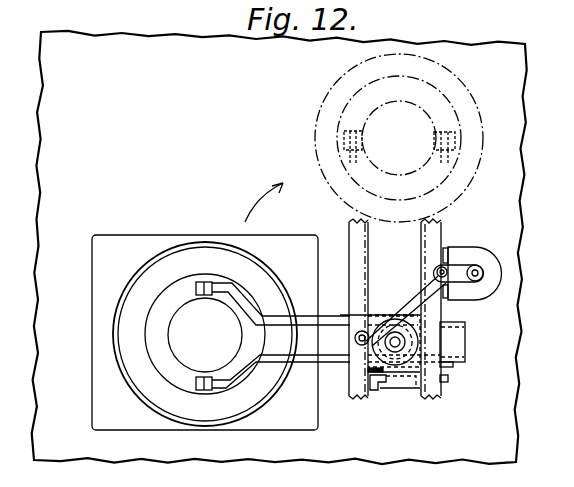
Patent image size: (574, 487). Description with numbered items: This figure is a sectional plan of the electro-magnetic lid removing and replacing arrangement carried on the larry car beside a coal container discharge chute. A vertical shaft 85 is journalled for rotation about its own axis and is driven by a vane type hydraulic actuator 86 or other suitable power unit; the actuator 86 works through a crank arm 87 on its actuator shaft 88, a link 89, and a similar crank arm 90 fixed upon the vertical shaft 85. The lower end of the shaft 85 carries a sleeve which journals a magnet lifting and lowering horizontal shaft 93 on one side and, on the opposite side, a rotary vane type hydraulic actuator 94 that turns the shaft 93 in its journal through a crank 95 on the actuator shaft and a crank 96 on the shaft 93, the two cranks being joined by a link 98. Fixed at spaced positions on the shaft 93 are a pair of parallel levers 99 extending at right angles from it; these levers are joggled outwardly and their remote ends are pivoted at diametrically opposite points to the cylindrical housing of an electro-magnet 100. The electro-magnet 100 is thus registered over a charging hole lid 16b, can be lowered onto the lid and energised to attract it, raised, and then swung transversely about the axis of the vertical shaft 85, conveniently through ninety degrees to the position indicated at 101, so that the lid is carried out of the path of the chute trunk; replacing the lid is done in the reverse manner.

The swung-aside position of the electro-magnet 101 is at (347, 68).
The charging hole lid 16b is at (188, 257).
The electro-magnet 100 is at (168, 333).
The parallel levers 99 is at (296, 355).
The crank arm 90 is at (385, 335).
The vertical shaft 85 is at (358, 341).
The magnet lifting and lowering horizontal shaft 93 is at (368, 371).
The crank 96 is at (390, 384).
The link 98 is at (416, 390).
The rotary vane type hydraulic actuator 94 is at (457, 345).
The crank 95 is at (449, 379).
The vane type hydraulic actuator 86 is at (486, 293).
The crank arm 87 is at (455, 270).
The actuator shaft 88 is at (478, 268).
The link 89 is at (393, 312).